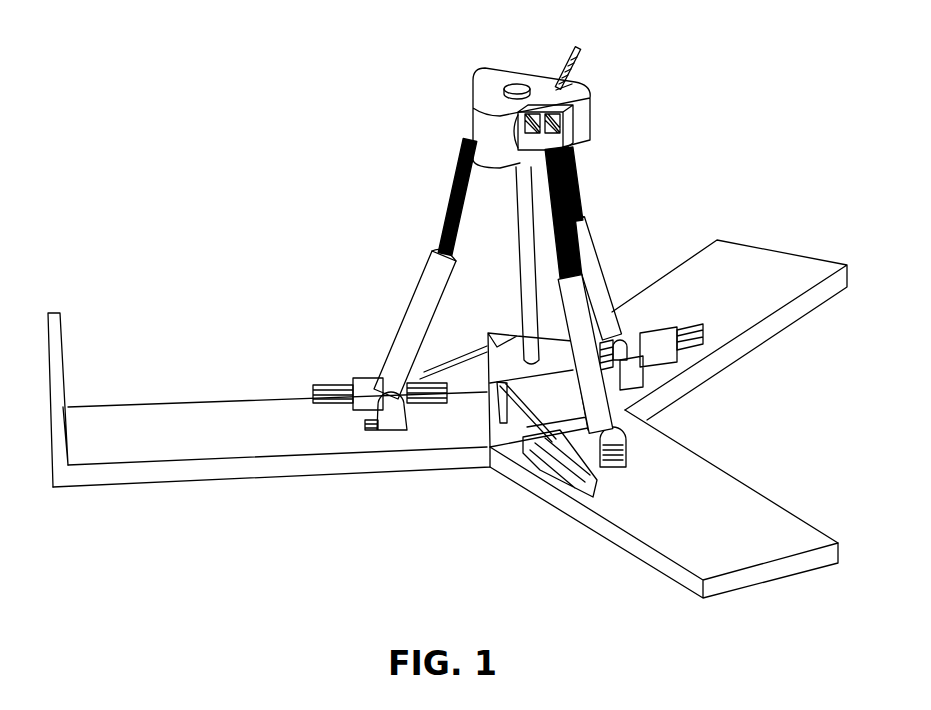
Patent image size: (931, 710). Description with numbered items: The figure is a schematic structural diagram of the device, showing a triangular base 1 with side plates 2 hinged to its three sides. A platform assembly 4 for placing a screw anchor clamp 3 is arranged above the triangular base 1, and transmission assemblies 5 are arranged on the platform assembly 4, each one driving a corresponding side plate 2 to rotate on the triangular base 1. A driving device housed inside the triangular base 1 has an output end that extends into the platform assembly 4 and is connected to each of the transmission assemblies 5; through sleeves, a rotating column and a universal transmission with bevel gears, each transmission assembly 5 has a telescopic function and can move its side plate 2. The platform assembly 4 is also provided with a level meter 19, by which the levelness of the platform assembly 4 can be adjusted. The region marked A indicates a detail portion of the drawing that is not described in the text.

The triangular base 1 is at (547, 392).
The side plates 2 is at (693, 495).
The screw anchor clamp 3 is at (578, 50).
The platform assembly 4 is at (547, 84).
The transmission assemblies 5 is at (417, 260).
The level meter 19 is at (517, 83).
The detail portion A is at (563, 137).